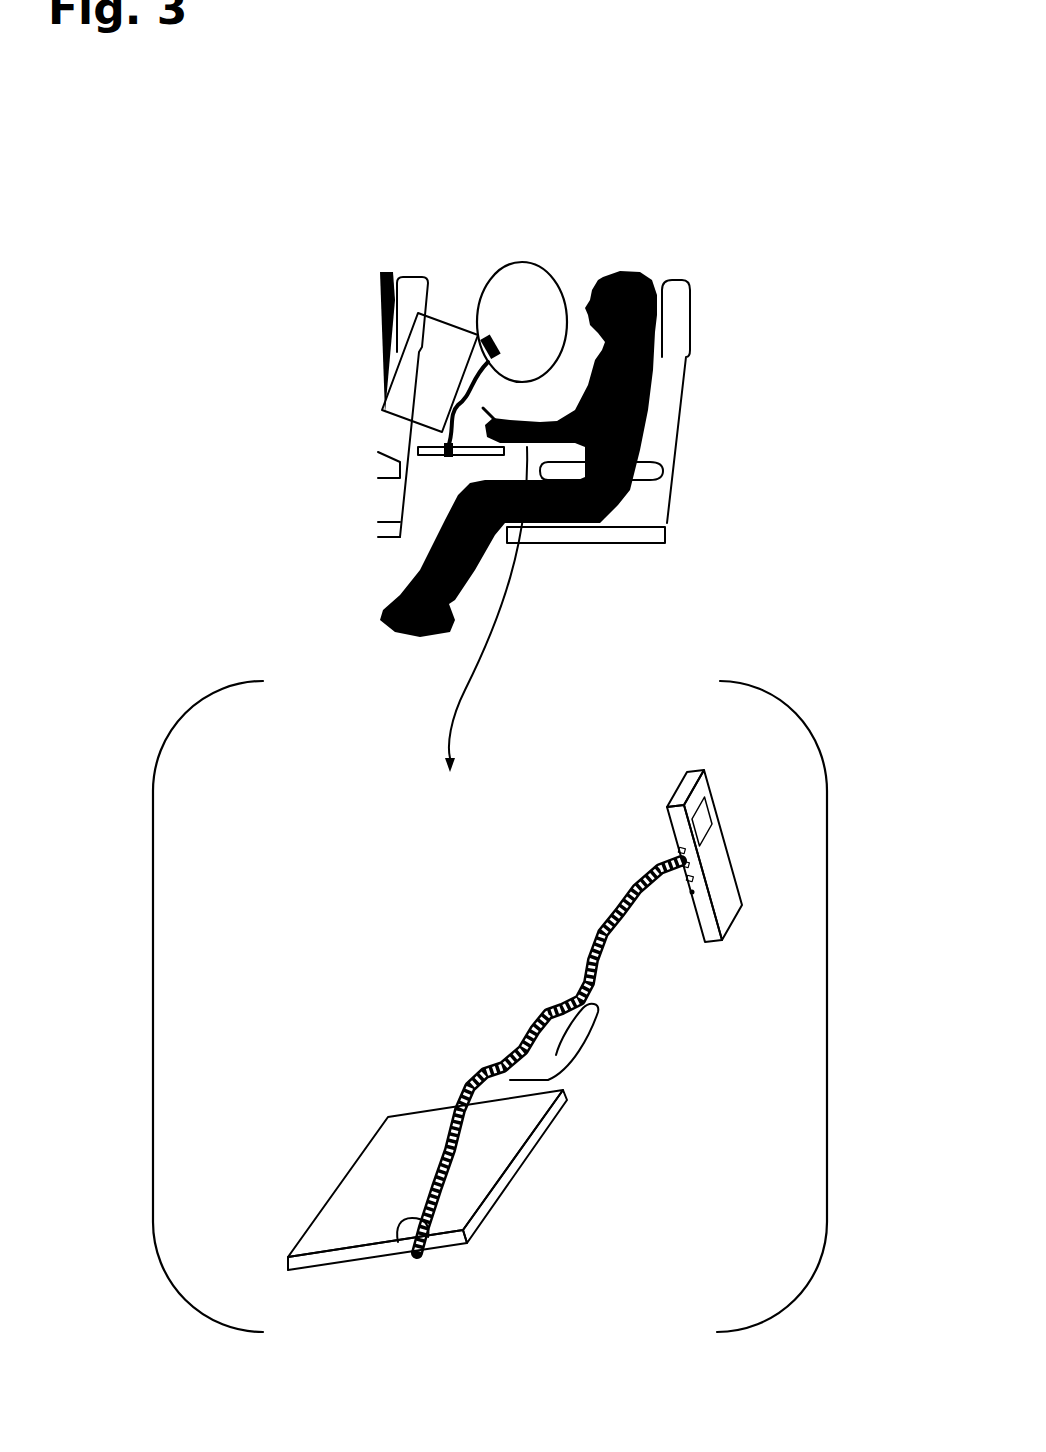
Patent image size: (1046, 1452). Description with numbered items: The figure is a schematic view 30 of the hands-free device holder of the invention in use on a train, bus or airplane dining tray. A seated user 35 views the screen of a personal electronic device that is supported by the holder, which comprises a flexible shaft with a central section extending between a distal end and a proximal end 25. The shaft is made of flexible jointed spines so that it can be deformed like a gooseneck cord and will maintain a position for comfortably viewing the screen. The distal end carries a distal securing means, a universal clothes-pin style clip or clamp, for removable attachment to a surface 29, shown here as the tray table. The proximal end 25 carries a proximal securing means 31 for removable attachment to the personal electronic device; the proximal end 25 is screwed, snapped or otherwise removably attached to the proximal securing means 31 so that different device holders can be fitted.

The proximal end 25 is at (483, 343).
The surface 29 is at (450, 458).
The schematic view of the hands-free device holder 30 is at (312, 127).
The proximal securing means 31 is at (558, 266).
The user 35 is at (615, 273).